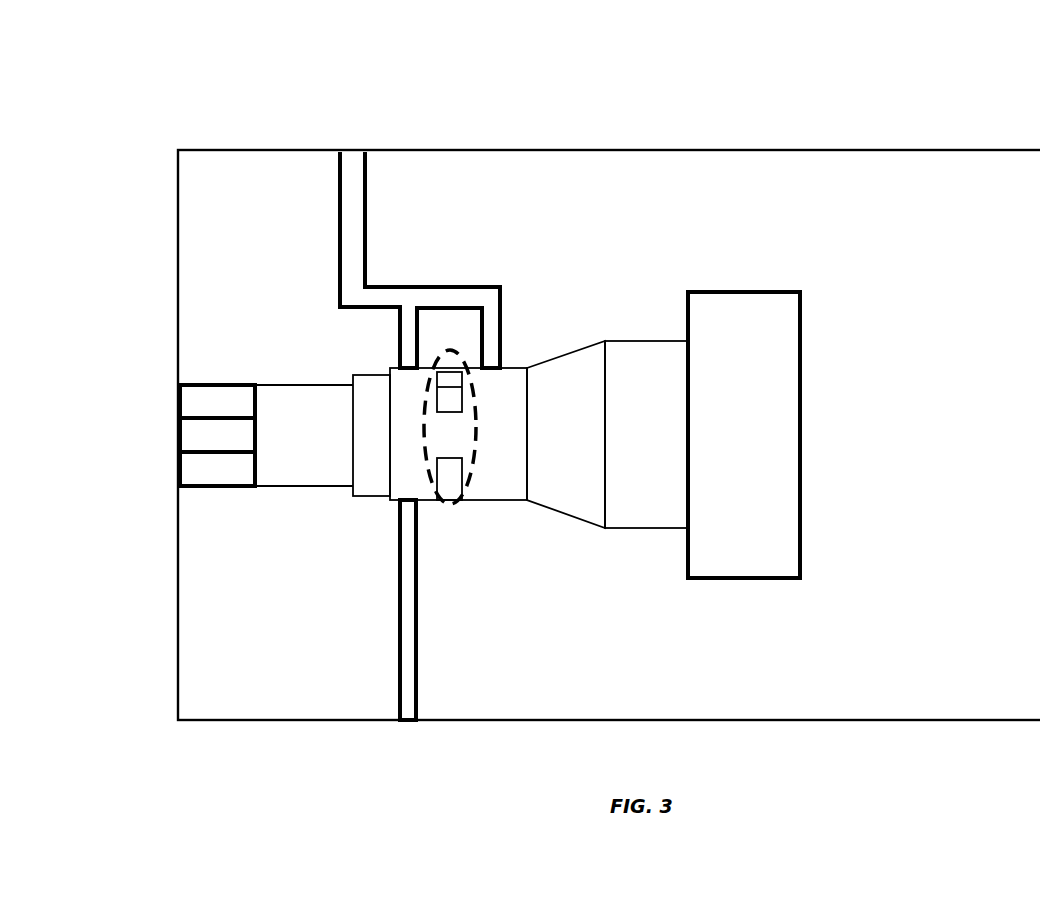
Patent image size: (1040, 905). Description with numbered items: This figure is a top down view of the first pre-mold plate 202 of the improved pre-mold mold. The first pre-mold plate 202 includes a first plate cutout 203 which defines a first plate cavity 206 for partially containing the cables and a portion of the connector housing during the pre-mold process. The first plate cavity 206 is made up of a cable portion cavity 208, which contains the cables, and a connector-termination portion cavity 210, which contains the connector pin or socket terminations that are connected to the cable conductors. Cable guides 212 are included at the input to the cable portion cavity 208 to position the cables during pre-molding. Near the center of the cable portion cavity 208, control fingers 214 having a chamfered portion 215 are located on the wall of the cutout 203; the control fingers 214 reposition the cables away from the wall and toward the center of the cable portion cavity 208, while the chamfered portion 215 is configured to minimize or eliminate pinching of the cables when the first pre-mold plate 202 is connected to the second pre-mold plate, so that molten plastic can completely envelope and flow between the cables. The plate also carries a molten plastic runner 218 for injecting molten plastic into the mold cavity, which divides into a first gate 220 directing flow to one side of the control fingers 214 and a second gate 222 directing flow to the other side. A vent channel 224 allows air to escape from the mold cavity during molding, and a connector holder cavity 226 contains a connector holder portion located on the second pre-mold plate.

The first pre-mold plate 202 is at (884, 129).
The first plate cutout 203 is at (563, 335).
The first plate cavity 206 is at (363, 487).
The cable portion cavity 208 is at (578, 449).
The connector-termination portion cavity 210 is at (653, 515).
The cable guides 212 is at (212, 468).
The control fingers 214 is at (465, 470).
The chamfered portion 215 is at (452, 495).
The molten plastic runner 218 is at (352, 217).
The first gate 220 is at (398, 325).
The second gate 222 is at (475, 285).
The vent channel 224 is at (410, 683).
The connector holder cavity 226 is at (759, 454).